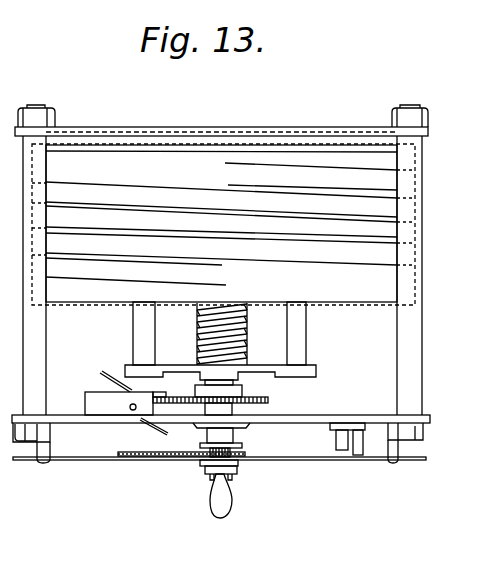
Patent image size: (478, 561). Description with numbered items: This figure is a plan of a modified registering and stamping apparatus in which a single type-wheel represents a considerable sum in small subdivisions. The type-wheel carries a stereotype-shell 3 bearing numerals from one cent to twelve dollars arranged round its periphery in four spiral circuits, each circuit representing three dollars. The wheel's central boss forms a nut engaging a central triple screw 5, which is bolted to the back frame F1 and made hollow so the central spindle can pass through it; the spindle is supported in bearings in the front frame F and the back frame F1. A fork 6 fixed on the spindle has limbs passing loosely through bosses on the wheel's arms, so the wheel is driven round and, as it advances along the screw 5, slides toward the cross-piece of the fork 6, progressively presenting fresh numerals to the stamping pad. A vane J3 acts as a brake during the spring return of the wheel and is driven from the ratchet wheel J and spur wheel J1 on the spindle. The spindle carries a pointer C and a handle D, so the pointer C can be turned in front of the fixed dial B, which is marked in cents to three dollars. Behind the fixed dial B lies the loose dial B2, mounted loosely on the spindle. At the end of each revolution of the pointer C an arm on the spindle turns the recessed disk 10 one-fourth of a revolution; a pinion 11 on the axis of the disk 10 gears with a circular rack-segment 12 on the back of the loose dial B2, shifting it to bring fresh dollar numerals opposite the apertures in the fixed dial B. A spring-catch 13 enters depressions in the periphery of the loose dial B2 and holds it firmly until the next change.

The back frame F1 is at (168, 130).
The stereotype-shell 3 is at (223, 224).
The fork 6 is at (219, 333).
The central triple screw 5 is at (222, 334).
The ratchet wheel J is at (255, 400).
The spur wheel J1 is at (184, 399).
The vane J3 is at (98, 398).
The front frame F is at (67, 418).
The pinion 11 is at (207, 440).
The disk 10 is at (241, 447).
The circular rack-segment 12 is at (181, 445).
The fixed dial B is at (98, 449).
The loose dial B2 is at (223, 439).
The spring-catch 13 is at (340, 439).
The pointer C is at (203, 464).
The handle D is at (218, 508).